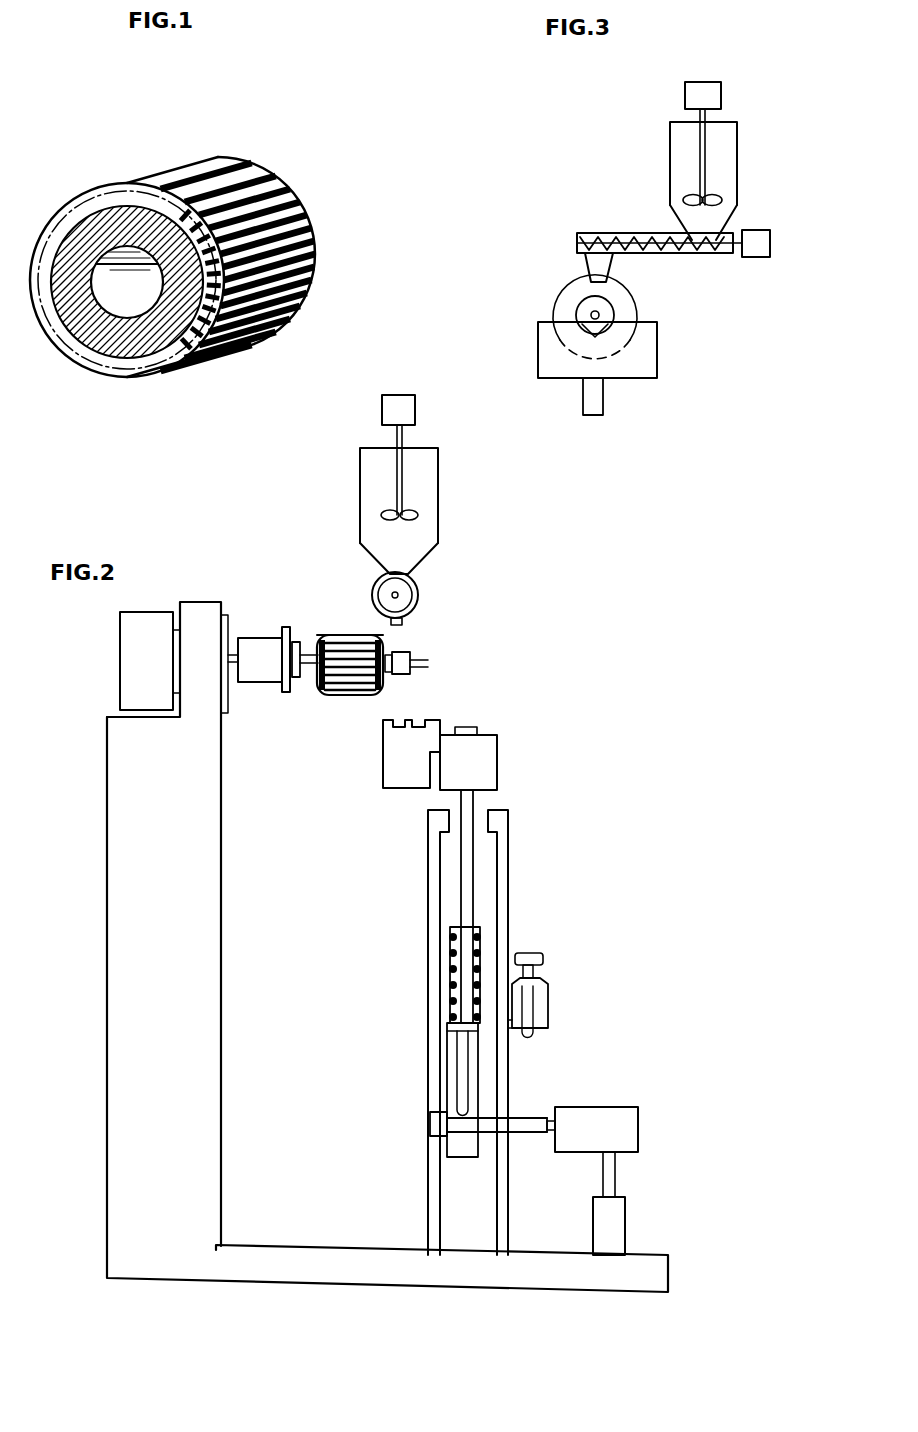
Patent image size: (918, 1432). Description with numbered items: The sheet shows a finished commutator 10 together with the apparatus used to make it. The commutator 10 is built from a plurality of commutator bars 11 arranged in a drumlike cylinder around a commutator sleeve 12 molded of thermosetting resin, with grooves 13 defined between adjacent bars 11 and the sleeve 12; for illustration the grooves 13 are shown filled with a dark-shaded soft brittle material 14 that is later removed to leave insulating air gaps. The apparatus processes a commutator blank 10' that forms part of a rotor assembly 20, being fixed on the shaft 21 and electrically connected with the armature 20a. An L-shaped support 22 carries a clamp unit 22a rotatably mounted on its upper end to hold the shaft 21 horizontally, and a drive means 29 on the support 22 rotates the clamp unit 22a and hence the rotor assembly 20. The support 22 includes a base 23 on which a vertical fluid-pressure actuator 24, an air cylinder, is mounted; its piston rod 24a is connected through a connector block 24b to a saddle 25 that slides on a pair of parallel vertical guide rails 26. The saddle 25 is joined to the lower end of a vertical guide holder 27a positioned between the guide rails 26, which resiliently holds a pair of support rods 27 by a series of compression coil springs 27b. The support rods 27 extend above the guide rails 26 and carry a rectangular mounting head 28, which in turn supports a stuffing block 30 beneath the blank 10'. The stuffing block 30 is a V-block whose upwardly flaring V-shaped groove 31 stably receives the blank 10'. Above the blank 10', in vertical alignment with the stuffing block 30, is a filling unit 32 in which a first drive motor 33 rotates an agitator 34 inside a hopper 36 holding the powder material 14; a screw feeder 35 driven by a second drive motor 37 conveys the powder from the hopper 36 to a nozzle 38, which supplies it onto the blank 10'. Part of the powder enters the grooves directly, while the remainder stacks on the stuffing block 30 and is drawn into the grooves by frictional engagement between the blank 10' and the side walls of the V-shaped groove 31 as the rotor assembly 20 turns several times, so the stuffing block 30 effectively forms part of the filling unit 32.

In FIG. 1, the commutator 10 is at (172, 231).
In FIG. 1, the commutator bars 11 is at (300, 210).
In FIG. 1, the commutator sleeve 12 is at (85, 342).
In FIG. 1, the grooves 13 is at (318, 292).
In FIG. 1, the soft brittle material 14 is at (268, 166).
In FIG. 3, the commutator blank 10' is at (548, 311).
In FIG. 2, the commutator blank 10' is at (418, 684).
In FIG. 2, the rotor assembly 20 is at (345, 633).
In FIG. 3, the armature 20a is at (634, 284).
In FIG. 2, the armature 20a is at (332, 693).
In FIG. 3, the shaft 21 is at (600, 315).
In FIG. 2, the shaft 21 is at (430, 664).
In FIG. 2, the L-shaped support 22 is at (222, 860).
In FIG. 2, the clamp unit 22a is at (262, 638).
In FIG. 2, the base 23 is at (670, 1280).
In FIG. 2, the fluid-pressure actuator 24 is at (627, 1225).
In FIG. 2, the piston rod 24a is at (615, 1175).
In FIG. 2, the connector block 24b is at (610, 1107).
In FIG. 2, the saddle 25 is at (528, 1118).
In FIG. 2, the guide rails 26 is at (428, 915).
In FIG. 3, the support rods 27 is at (605, 405).
In FIG. 2, the support rods 27 is at (475, 802).
In FIG. 2, the guide holder 27a is at (462, 1160).
In FIG. 2, the compression coil springs 27b is at (478, 942).
In FIG. 2, the mounting head 28 is at (490, 762).
In FIG. 2, the drive means 29 is at (120, 690).
In FIG. 3, the stuffing block 30 is at (642, 360).
In FIG. 2, the stuffing block 30 is at (383, 778).
In FIG. 3, the V-shaped groove 31 is at (586, 328).
In FIG. 3, the filling unit 32 is at (598, 178).
In FIG. 2, the filling unit 32 is at (440, 487).
In FIG. 3, the first drive motor 33 is at (685, 98).
In FIG. 2, the first drive motor 33 is at (417, 408).
In FIG. 3, the agitator 34 is at (688, 199).
In FIG. 2, the agitator 34 is at (416, 515).
In FIG. 3, the screw feeder 35 is at (592, 237).
In FIG. 2, the screw feeder 35 is at (406, 595).
In FIG. 3, the hopper 36 is at (670, 150).
In FIG. 2, the hopper 36 is at (360, 478).
In FIG. 3, the second drive motor 37 is at (760, 230).
In FIG. 3, the nozzle 38 is at (584, 266).
In FIG. 2, the nozzle 38 is at (405, 621).